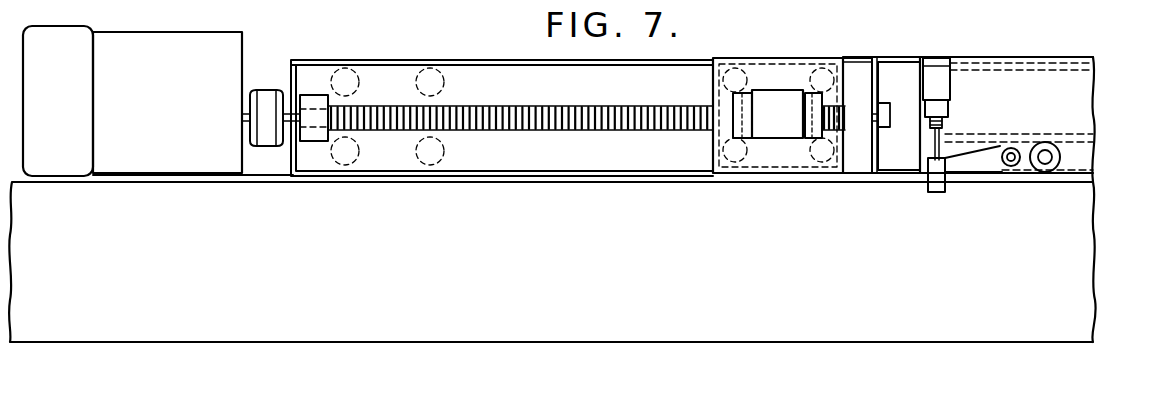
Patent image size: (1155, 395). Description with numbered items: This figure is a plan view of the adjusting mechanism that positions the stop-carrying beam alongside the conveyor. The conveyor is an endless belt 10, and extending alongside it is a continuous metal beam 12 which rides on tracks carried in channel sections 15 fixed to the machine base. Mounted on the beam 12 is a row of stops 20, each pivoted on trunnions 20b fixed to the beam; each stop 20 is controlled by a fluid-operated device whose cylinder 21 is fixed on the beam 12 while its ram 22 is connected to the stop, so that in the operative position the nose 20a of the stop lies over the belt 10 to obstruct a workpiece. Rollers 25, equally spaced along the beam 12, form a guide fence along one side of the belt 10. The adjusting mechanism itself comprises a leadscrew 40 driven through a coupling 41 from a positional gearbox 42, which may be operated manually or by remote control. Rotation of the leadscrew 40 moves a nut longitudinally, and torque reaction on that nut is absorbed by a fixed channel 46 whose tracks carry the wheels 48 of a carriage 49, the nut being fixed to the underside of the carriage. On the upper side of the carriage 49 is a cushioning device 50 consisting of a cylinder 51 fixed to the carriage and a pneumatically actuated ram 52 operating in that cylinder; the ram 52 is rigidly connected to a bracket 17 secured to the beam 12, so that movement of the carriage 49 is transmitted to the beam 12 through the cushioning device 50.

The endless belt 10 is at (1057, 274).
The continuous metal beam 12 is at (1066, 58).
The channel section 15 is at (1005, 66).
The bracket 17 is at (884, 62).
The stop 20 is at (985, 158).
The nose 20a is at (1005, 234).
The trunnion 20b is at (1018, 150).
The cylinder 21 is at (935, 58).
The ram 22 is at (940, 136).
The roller 25 is at (1060, 157).
The leadscrew 40 is at (505, 107).
The coupling 41 is at (268, 95).
The positional gearbox 42 is at (158, 101).
The fixed channel 46 is at (323, 60).
The wheel 48 is at (828, 70).
The carriage 49 is at (770, 78).
The cushioning device 50 is at (779, 159).
The cylinder 51 is at (812, 140).
The ram 52 is at (858, 118).